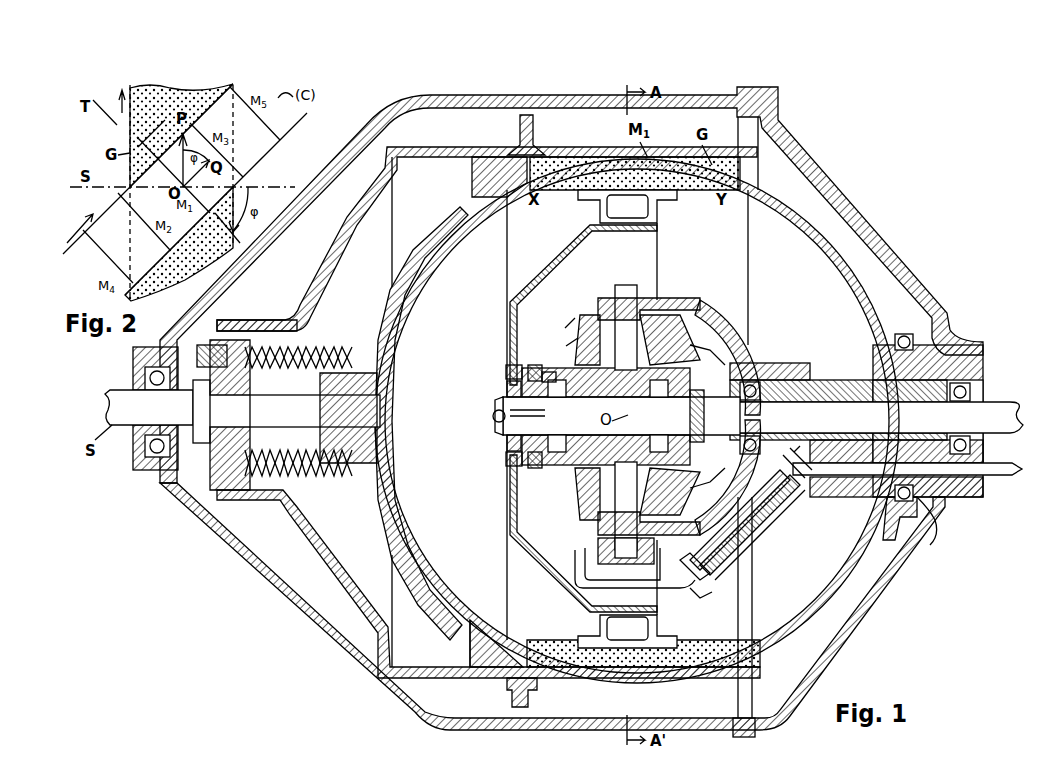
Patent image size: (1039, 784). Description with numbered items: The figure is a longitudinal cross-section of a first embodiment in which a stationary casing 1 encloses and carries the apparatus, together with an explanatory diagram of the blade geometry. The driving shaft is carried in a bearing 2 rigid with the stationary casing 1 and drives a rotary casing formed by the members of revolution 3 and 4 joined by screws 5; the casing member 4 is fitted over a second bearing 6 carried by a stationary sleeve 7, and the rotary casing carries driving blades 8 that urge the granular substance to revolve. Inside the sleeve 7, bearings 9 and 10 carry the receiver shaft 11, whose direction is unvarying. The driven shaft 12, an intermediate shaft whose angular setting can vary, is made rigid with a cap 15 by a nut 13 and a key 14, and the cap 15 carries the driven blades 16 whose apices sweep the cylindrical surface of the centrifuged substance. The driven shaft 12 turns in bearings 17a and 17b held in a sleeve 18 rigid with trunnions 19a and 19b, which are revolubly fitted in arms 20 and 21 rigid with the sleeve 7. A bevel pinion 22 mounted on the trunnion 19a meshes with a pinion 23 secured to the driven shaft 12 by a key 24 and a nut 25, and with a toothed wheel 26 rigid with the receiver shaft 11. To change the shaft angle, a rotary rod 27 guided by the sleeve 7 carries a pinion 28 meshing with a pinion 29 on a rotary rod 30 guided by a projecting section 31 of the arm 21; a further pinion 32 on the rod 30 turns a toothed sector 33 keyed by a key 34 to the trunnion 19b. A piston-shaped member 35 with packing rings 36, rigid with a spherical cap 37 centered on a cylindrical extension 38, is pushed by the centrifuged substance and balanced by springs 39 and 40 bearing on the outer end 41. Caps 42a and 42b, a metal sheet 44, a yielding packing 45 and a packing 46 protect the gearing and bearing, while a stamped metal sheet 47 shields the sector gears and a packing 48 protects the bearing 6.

In FIG. 1, the stationary casing 1 is at (295, 620).
In FIG. 1, the bearing 2 is at (150, 470).
In FIG. 1, the member of revolution 3 is at (318, 555).
In FIG. 1, the casing member 4 is at (808, 588).
In FIG. 1, the screws 5 is at (506, 692).
In FIG. 1, the second bearing 6 is at (900, 512).
In FIG. 1, the stationary sleeve 7 is at (972, 366).
In FIG. 1, the blades 8 is at (590, 148).
In FIG. 1, the bearing 9 is at (750, 440).
In FIG. 1, the bearing 10 is at (956, 436).
In FIG. 1, the receiver shaft 11 is at (995, 410).
In FIG. 1, the driven shaft 12 is at (512, 436).
In FIG. 1, the nut 13 is at (492, 414).
In FIG. 1, the key 14 is at (497, 400).
In FIG. 1, the cap 15 is at (548, 268).
In FIG. 1, the driven blades 16 is at (592, 195).
In FIG. 2, the driven blades 16 is at (151, 134).
In FIG. 1, the bearing 17a is at (606, 397).
In FIG. 1, the bearing 17b is at (606, 422).
In FIG. 1, the sleeve 18 is at (636, 501).
In FIG. 1, the trunnion 19a is at (626, 292).
In FIG. 1, the trunnion 19b is at (620, 508).
In FIG. 1, the arm 20 is at (690, 297).
In FIG. 1, the arm 21 is at (572, 520).
In FIG. 1, the bevel pinion 22 is at (592, 315).
In FIG. 1, the pinion 23 is at (712, 318).
In FIG. 1, the key 24 is at (688, 414).
In FIG. 1, the nut 25 is at (707, 416).
In FIG. 1, the toothed wheel 26 is at (735, 336).
In FIG. 1, the rotary rod 27 is at (996, 475).
In FIG. 1, the pinion 28 is at (802, 484).
In FIG. 1, the pinion 29 is at (785, 510).
In FIG. 1, the rotary rod 30 is at (762, 532).
In FIG. 1, the projecting section 31 is at (742, 552).
In FIG. 1, the pinion 32 is at (705, 578).
In FIG. 1, the toothed sector 33 is at (664, 570).
In FIG. 1, the key 34 is at (622, 566).
In FIG. 1, the piston-shaped member 35 is at (478, 181).
In FIG. 1, the packing rings 36 is at (507, 152).
In FIG. 1, the spherical cap 37 is at (438, 246).
In FIG. 1, the cylindrical extension 38 is at (381, 414).
In FIG. 1, the spring 39 is at (326, 344).
In FIG. 1, the spring 40 is at (318, 480).
In FIG. 1, the outer end 41 is at (240, 320).
In FIG. 1, the cap 42a is at (536, 360).
In FIG. 1, the cap 42b is at (535, 470).
In FIG. 1, the metal sheet 44 is at (546, 370).
In FIG. 1, the yielding packing 45 is at (510, 466).
In FIG. 1, the packing 46 is at (508, 378).
In FIG. 1, the stamped metal sheet 47 is at (690, 598).
In FIG. 1, the packing 48 is at (878, 492).